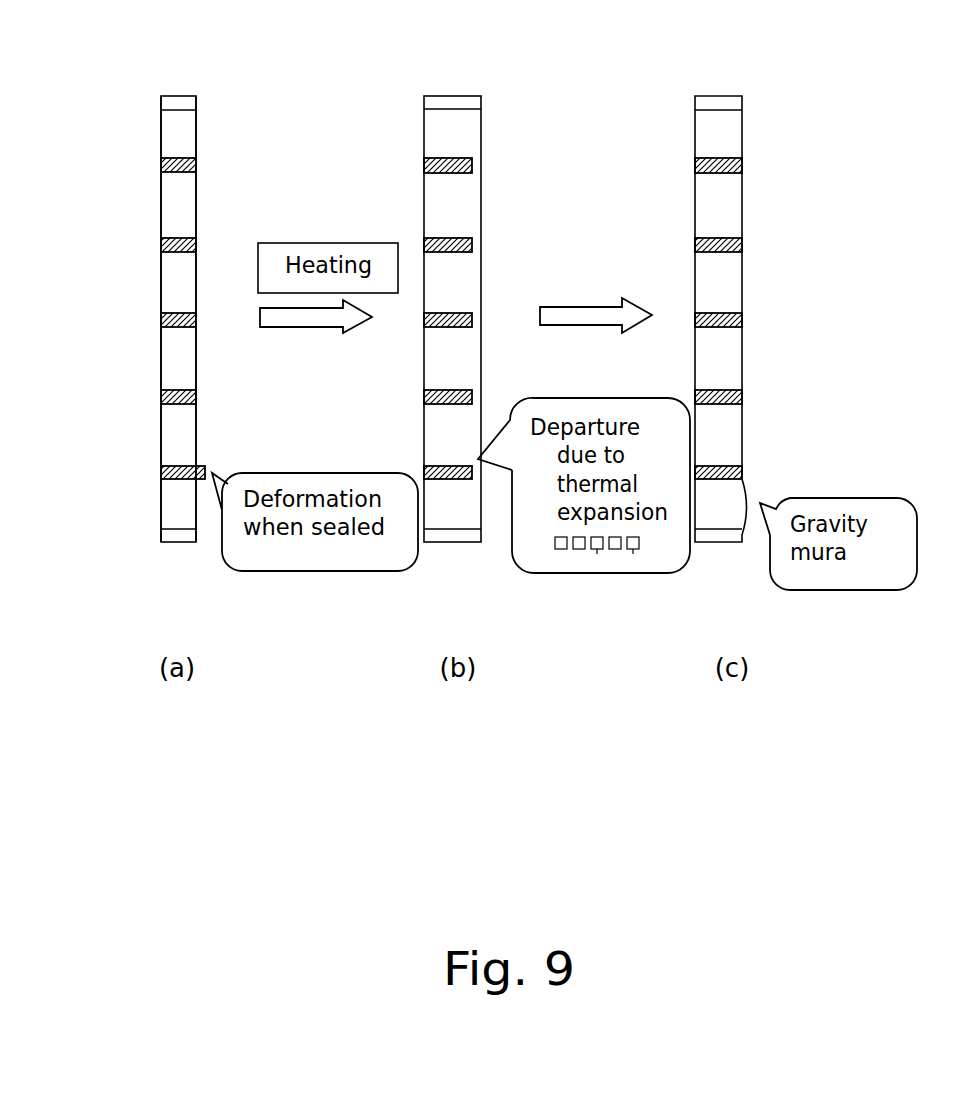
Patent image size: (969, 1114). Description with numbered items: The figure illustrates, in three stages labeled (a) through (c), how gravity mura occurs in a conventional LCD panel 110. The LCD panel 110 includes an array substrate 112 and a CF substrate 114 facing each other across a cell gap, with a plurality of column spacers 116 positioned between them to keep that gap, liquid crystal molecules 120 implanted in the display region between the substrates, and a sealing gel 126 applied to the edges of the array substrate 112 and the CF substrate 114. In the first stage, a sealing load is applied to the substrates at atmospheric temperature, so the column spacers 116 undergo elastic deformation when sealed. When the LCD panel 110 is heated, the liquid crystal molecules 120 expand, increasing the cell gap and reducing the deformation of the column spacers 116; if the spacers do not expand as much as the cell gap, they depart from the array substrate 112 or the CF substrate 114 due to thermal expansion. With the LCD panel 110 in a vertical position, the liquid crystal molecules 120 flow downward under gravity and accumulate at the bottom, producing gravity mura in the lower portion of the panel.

The LCD panel 110 is at (192, 65).
The array substrate 112 is at (161, 208).
The CF substrate 114 is at (196, 433).
The column spacers 116 is at (168, 157).
The liquid crystal molecules 120 is at (180, 353).
The sealing gel 126 is at (170, 100).